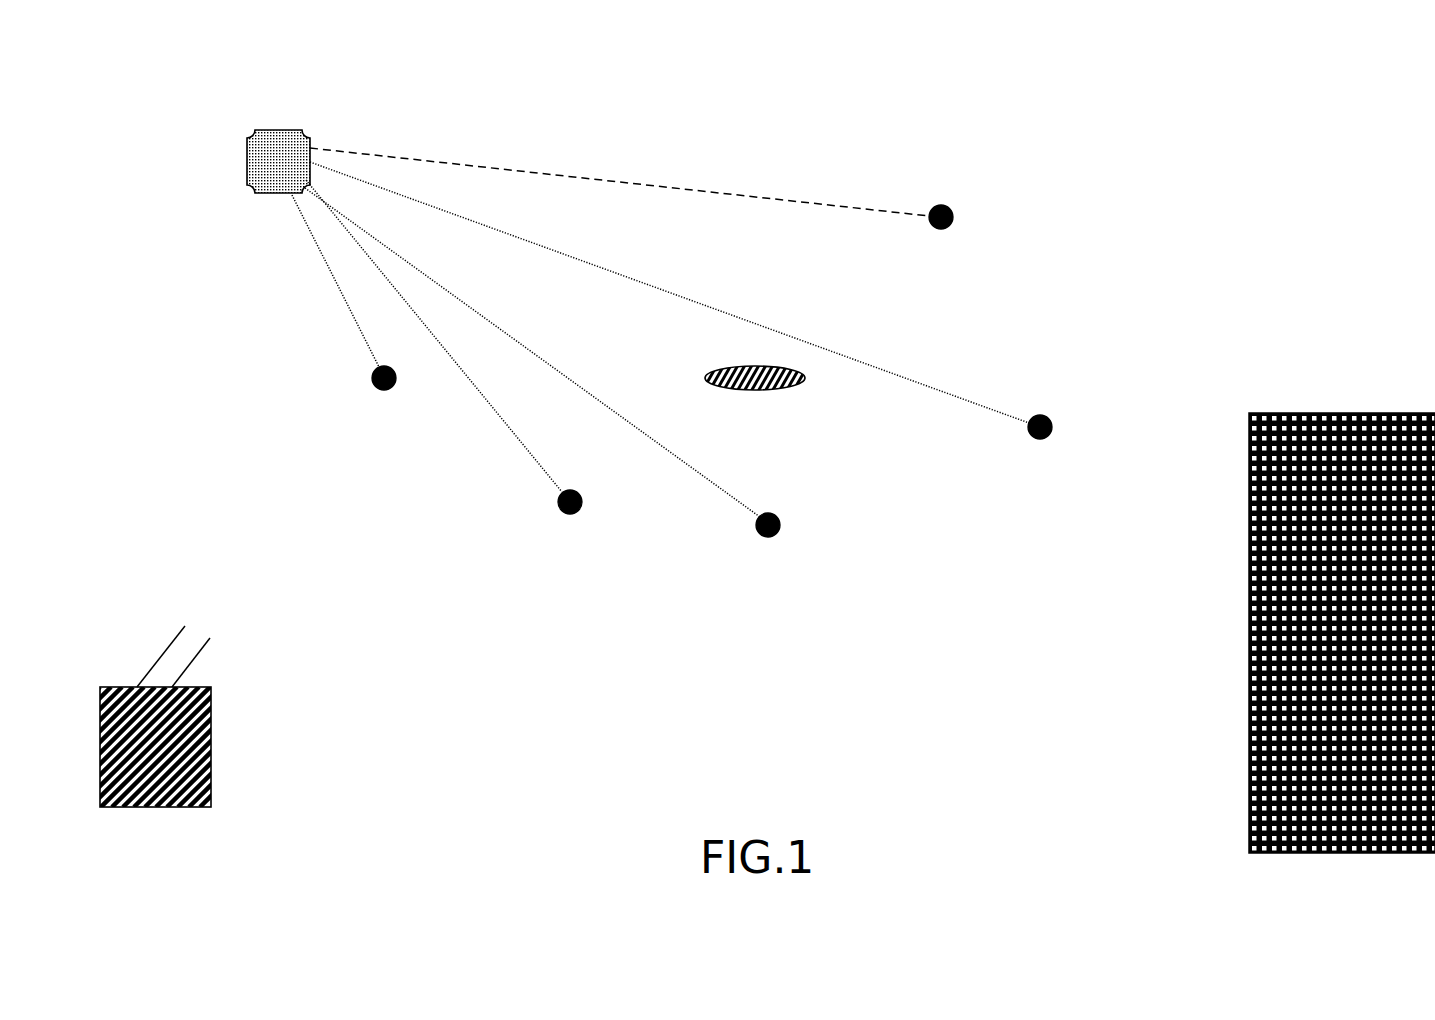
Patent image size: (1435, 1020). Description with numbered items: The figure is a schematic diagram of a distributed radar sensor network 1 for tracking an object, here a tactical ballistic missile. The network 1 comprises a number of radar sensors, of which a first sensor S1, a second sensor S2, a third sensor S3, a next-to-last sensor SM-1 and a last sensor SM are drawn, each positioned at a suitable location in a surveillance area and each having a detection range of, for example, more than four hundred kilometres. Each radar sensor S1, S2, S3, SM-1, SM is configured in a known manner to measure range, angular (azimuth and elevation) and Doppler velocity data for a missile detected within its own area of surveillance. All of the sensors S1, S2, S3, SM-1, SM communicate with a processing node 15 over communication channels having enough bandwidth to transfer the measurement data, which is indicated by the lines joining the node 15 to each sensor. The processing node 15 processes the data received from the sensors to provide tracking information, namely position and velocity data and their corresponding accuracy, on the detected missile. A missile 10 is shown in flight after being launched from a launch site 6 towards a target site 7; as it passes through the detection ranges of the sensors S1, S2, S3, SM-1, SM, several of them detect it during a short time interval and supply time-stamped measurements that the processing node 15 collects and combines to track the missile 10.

The distributed radar sensor network 1 is at (744, 145).
The processing node 15 is at (287, 130).
The radar sensor SM is at (953, 219).
The radar sensor SM-1 is at (1052, 430).
The radar sensor S1 is at (384, 390).
The radar sensor S2 is at (582, 505).
The radar sensor S3 is at (780, 528).
The missile 10 is at (792, 388).
The launch site 6 is at (170, 790).
The target site 7 is at (1250, 779).